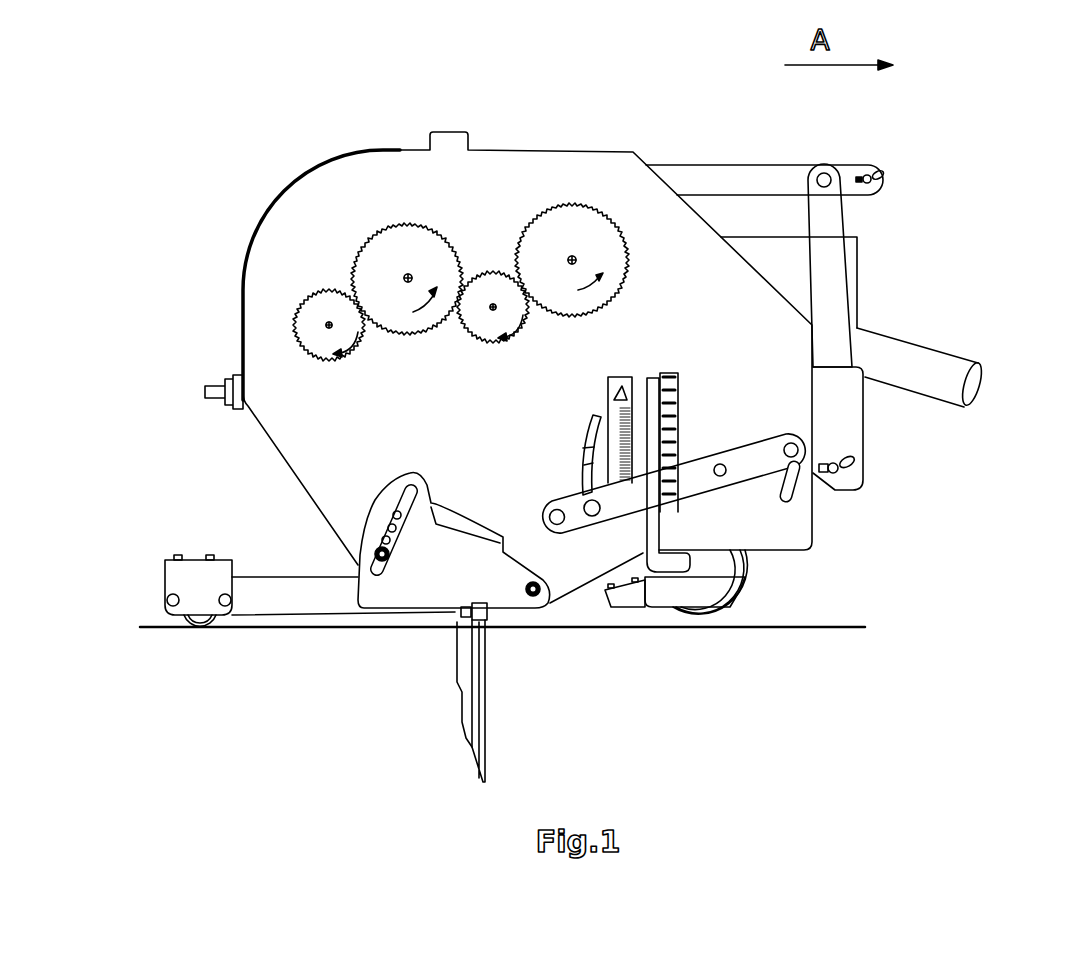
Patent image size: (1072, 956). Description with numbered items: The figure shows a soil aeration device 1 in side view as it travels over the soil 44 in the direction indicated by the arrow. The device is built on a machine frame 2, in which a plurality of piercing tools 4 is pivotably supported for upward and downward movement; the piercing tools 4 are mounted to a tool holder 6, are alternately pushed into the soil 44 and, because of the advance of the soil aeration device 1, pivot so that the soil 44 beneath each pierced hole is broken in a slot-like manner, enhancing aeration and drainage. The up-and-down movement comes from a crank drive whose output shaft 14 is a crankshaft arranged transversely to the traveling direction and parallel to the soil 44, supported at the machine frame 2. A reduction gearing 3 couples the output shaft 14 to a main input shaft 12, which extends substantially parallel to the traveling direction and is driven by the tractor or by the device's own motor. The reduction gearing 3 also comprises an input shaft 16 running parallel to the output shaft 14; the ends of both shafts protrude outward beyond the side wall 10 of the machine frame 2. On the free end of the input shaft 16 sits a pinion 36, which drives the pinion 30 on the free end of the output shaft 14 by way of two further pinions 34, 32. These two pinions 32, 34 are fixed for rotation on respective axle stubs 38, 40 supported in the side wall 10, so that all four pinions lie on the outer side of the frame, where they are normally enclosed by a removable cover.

The soil aeration device 1 is at (657, 83).
The machine frame 2 is at (633, 152).
The reduction gearing 3 is at (434, 203).
The piercing tools 4 is at (478, 747).
The tool holder 6 is at (484, 612).
The side wall 10 is at (667, 321).
The main input shaft 12 is at (928, 368).
The output shaft 14 is at (578, 260).
The input shaft 16 is at (327, 325).
The pinion 30 is at (552, 237).
The pinion 32 is at (485, 280).
The pinion 34 is at (387, 257).
The pinion 36 is at (317, 302).
The axle stub 38 is at (408, 284).
The axle stub 40 is at (493, 308).
The soil 44 is at (820, 722).